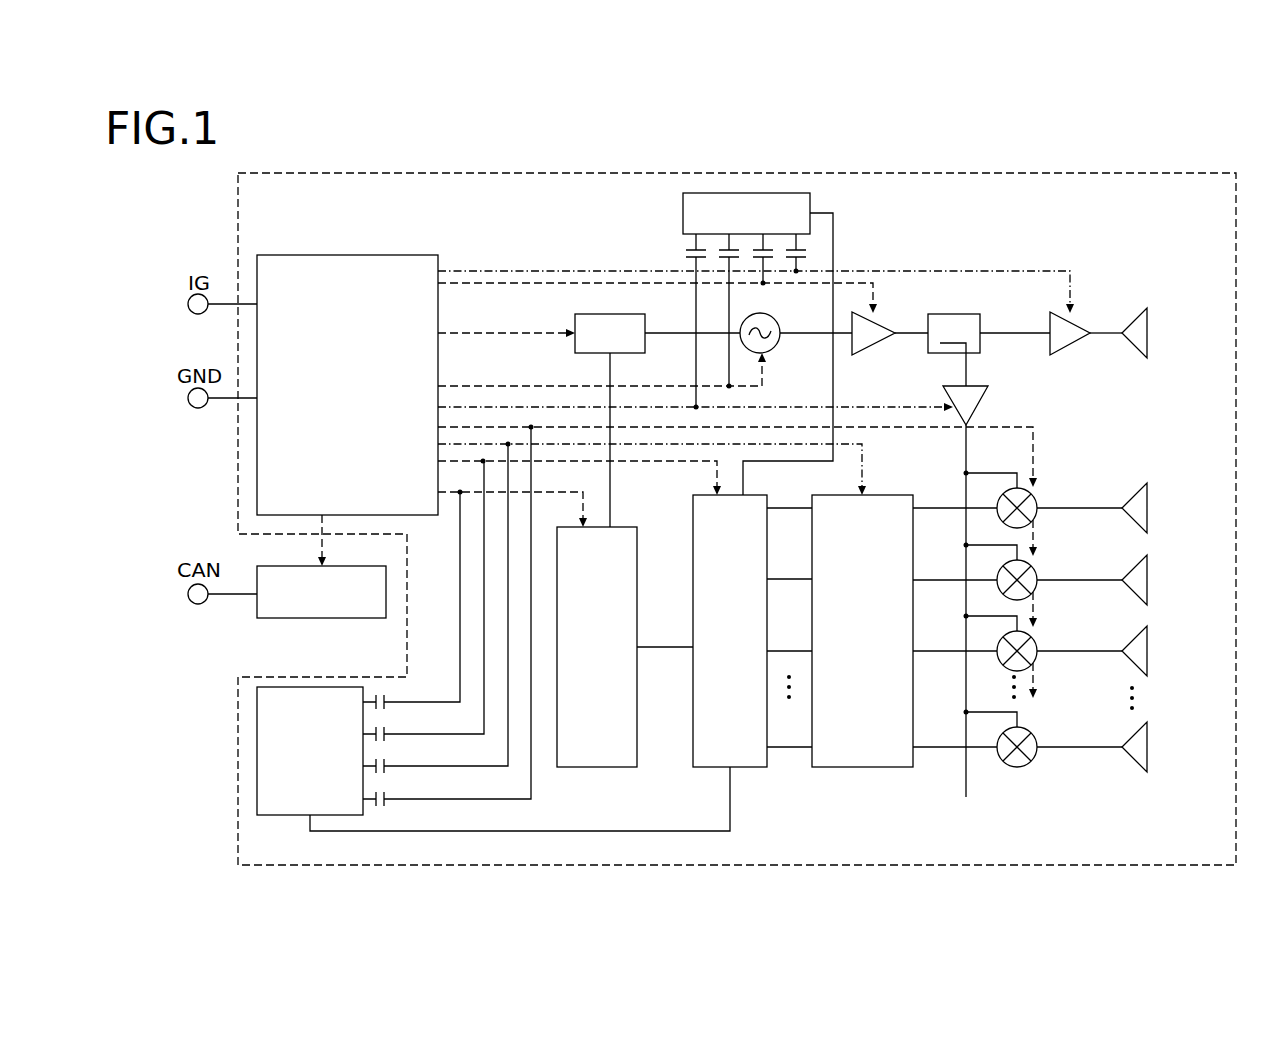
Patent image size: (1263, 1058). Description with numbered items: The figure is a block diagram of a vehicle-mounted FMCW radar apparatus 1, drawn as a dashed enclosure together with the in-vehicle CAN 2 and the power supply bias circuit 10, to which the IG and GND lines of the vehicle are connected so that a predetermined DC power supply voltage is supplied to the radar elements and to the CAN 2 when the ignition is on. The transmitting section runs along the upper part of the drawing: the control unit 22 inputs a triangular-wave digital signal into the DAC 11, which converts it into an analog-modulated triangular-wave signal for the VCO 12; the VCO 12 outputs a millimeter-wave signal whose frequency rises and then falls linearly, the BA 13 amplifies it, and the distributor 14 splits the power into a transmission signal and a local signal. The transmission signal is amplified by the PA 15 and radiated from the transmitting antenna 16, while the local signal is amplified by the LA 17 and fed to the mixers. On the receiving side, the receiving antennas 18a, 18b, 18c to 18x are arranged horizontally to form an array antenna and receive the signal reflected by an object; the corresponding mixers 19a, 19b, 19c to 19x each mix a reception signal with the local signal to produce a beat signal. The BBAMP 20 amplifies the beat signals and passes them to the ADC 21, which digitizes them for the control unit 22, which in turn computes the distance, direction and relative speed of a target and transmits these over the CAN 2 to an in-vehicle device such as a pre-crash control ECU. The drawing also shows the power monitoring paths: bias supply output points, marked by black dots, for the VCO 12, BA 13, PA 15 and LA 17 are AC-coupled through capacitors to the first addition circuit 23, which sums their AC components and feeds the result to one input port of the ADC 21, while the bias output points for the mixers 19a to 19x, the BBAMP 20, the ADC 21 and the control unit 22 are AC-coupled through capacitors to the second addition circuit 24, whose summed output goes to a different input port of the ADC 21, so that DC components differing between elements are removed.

The FMCW radar apparatus 1 is at (655, 172).
The CAN 2 is at (272, 619).
The power supply bias circuit 10 is at (373, 255).
The DAC 11 is at (620, 314).
The VCO 12 is at (775, 318).
The BA 13 is at (880, 322).
The distributor 14 is at (958, 314).
The PA 15 is at (1075, 322).
The transmitting antenna 16 is at (1150, 325).
The LA 17 is at (985, 402).
The receiving antenna 18a is at (1150, 502).
The receiving antenna 18b is at (1150, 574).
The receiving antenna 18c is at (1150, 645).
The receiving antenna 18x is at (1150, 741).
The mixer 19a is at (1040, 498).
The mixer 19b is at (1040, 570).
The mixer 19c is at (1040, 641).
The mixer 19x is at (1040, 737).
The BBAMP 20 is at (880, 768).
The ADC 21 is at (750, 768).
The control unit 22 is at (618, 768).
The first addition circuit 23 is at (683, 222).
The second addition circuit 24 is at (268, 816).